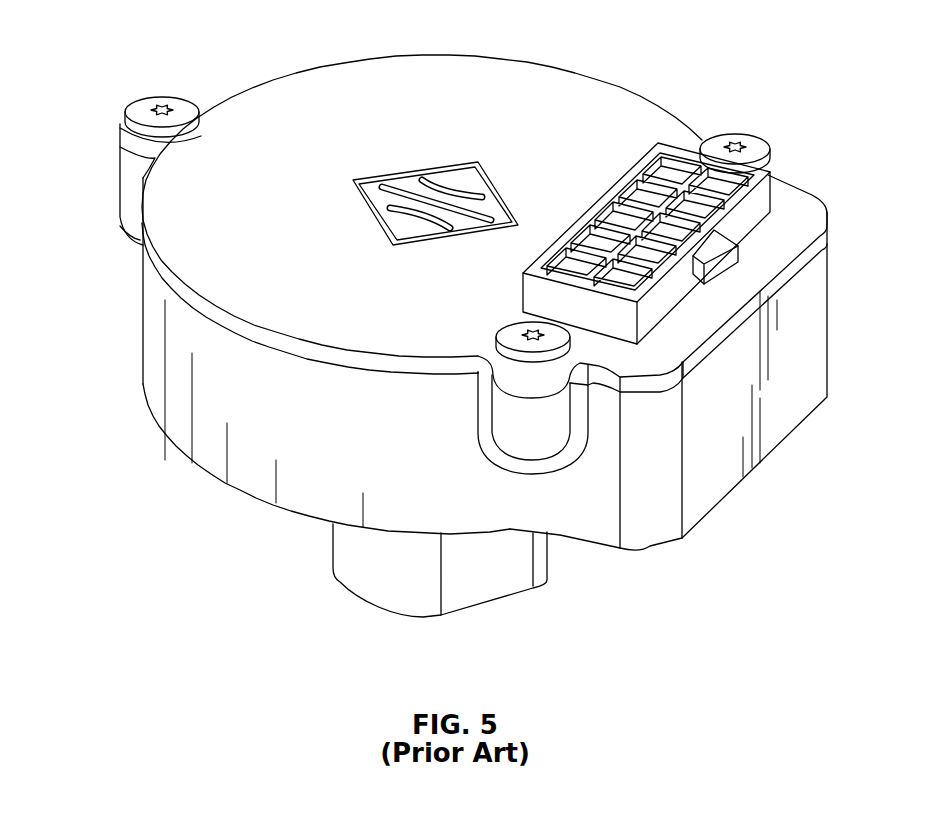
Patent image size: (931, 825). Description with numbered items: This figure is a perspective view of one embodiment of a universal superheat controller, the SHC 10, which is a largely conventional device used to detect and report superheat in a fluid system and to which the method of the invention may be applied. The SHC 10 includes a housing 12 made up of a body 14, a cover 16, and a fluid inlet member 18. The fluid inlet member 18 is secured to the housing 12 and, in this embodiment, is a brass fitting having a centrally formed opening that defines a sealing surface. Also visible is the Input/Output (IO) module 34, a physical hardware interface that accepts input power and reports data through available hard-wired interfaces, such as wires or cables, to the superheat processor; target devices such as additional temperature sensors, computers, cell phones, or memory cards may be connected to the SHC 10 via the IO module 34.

The SHC 10 is at (104, 34).
The housing 12 is at (136, 388).
The body 14 is at (180, 437).
The cover 16 is at (545, 75).
The fluid inlet member 18 is at (353, 575).
The Input/Output (IO) module 34 is at (768, 192).